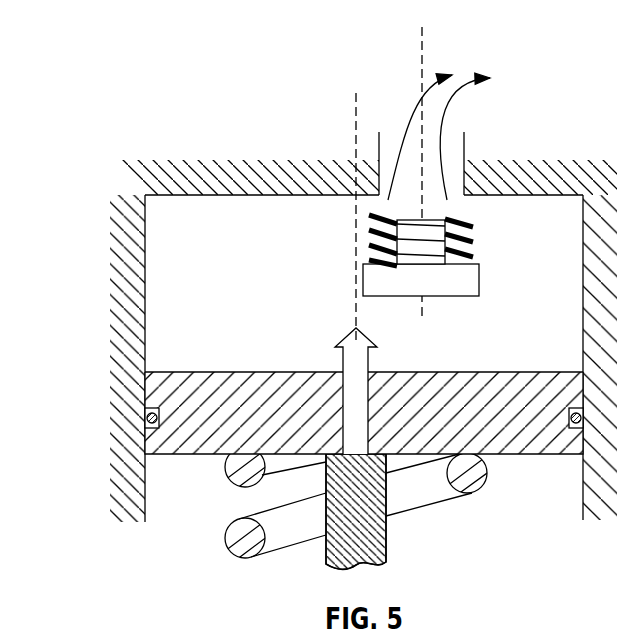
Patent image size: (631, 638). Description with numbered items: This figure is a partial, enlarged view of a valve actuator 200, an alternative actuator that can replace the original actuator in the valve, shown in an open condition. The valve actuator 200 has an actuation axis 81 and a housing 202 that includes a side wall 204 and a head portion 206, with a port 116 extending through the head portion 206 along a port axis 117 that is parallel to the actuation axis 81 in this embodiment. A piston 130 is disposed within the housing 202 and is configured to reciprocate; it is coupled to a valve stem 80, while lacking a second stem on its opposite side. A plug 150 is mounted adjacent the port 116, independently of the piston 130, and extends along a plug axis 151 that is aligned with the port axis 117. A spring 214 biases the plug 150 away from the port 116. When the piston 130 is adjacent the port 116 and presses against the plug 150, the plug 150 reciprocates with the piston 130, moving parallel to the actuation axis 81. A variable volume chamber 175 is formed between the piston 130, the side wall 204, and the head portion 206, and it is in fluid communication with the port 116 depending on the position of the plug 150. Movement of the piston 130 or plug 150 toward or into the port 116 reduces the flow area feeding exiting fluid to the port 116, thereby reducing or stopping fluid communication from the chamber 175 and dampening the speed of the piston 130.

The valve stem 80 is at (375, 540).
The actuation axis 81 is at (356, 133).
The port 116 is at (464, 146).
The port axis 117 is at (420, 53).
The piston 130 is at (203, 447).
The plug 150 is at (458, 273).
The plug axis 151 is at (420, 73).
The variable volume chamber 175 is at (163, 336).
The valve actuator 200 is at (147, 192).
The housing 202 is at (140, 222).
The side wall 204 is at (140, 280).
The head portion 206 is at (252, 192).
The spring 214 is at (465, 253).